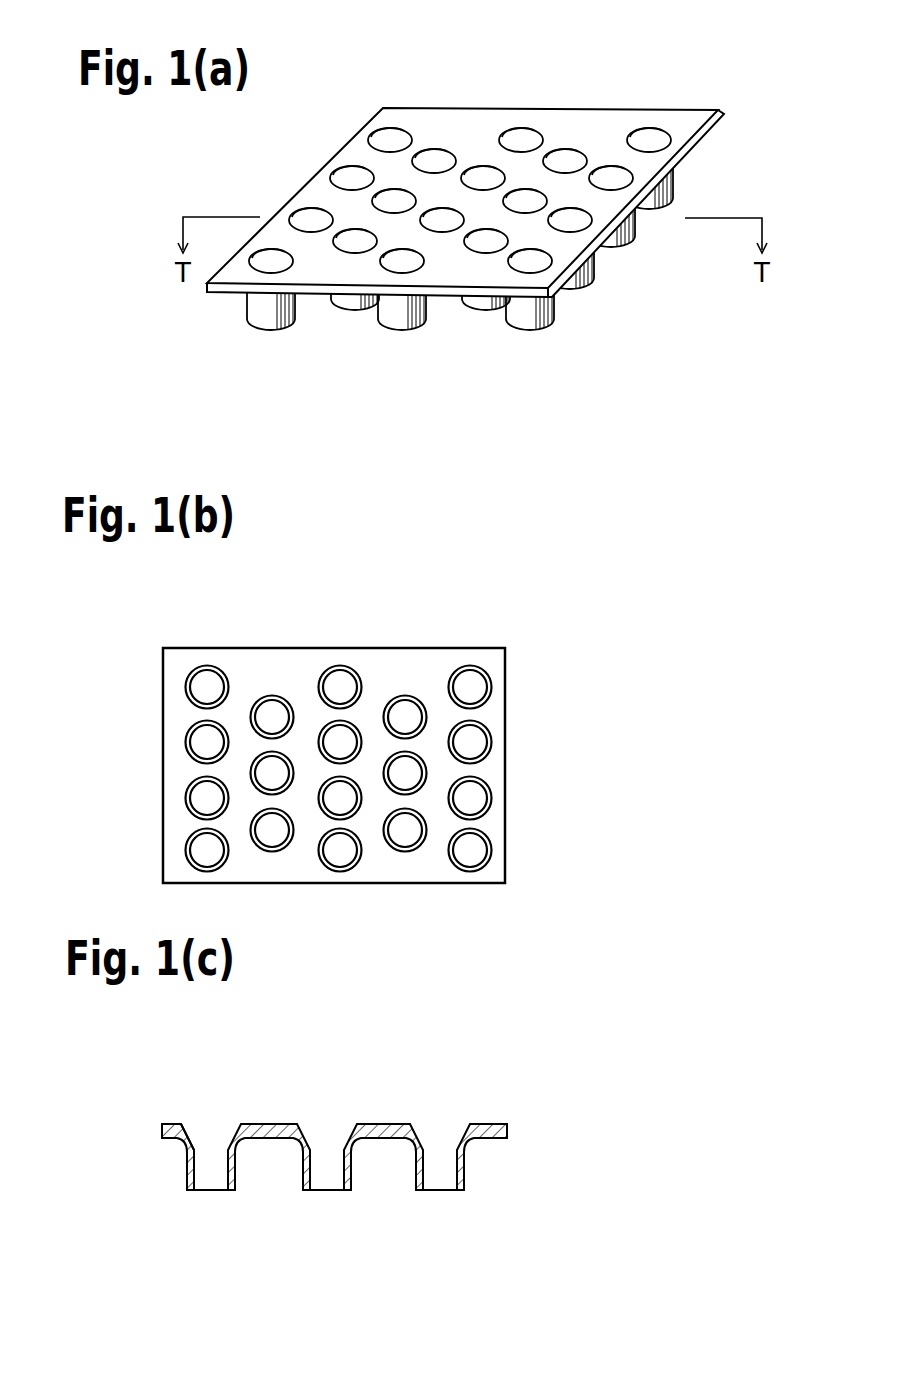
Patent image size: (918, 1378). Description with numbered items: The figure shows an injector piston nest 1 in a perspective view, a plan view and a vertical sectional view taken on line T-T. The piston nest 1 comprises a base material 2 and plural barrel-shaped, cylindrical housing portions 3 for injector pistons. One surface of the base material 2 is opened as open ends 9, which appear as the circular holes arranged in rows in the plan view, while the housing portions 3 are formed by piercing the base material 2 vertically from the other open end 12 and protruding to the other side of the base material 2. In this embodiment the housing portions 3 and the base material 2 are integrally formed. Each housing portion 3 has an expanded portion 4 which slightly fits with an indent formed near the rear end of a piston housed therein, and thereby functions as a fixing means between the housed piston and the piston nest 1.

In FIG. 1A, the piston nest 1 is at (699, 66).
In FIG. 1B, the piston nest 1 is at (348, 578).
In FIG. 1C, the piston nest 1 is at (308, 1051).
In FIG. 1A, the base material 2 is at (440, 130).
In FIG. 1B, the base material 2 is at (258, 663).
In FIG. 1C, the base material 2 is at (384, 1125).
In FIG. 1A, the housing portion 3 is at (580, 290).
In FIG. 1C, the housing portion 3 is at (465, 1177).
In FIG. 1C, the expanded portion 4 is at (185, 1157).
In FIG. 1A, the open end 9 is at (647, 147).
In FIG. 1B, the open end 9 is at (472, 687).
In FIG. 1C, the open end 9 is at (215, 1124).
In FIG. 1C, the open end 12 is at (323, 1183).